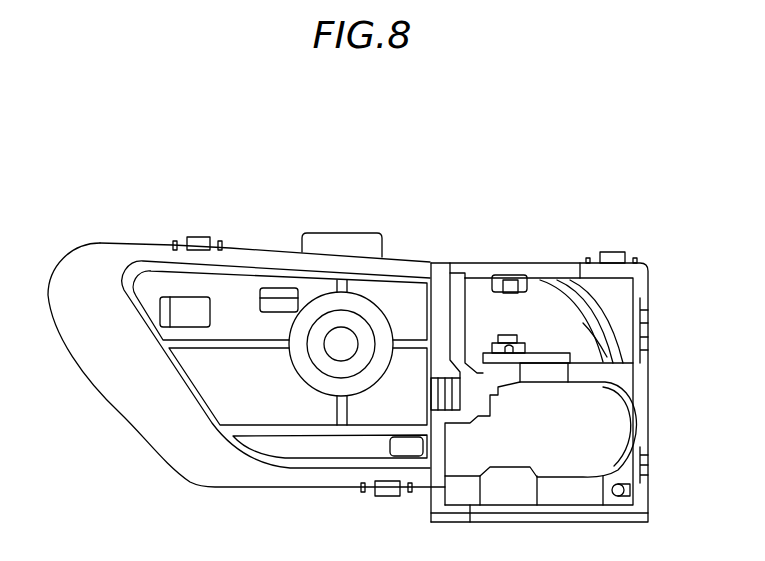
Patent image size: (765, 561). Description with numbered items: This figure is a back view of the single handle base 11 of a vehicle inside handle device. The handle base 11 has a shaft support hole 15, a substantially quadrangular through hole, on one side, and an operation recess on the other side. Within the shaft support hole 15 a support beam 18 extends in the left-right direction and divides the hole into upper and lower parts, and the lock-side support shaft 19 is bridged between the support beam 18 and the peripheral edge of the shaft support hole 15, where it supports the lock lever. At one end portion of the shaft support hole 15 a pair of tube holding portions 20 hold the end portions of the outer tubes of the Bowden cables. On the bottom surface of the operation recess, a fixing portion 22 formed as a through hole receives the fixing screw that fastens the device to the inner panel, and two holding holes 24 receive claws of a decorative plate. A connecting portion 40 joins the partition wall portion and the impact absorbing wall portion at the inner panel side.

The handle base 11 is at (618, 233).
The shaft support hole 15 is at (585, 453).
The support beam 18 is at (612, 378).
The lock-side support shaft 19 is at (510, 336).
The tube holding portion 20 is at (638, 316).
The fixing portion 22 is at (334, 348).
The holding hole 24 is at (190, 308).
The connecting portion 40 is at (455, 307).